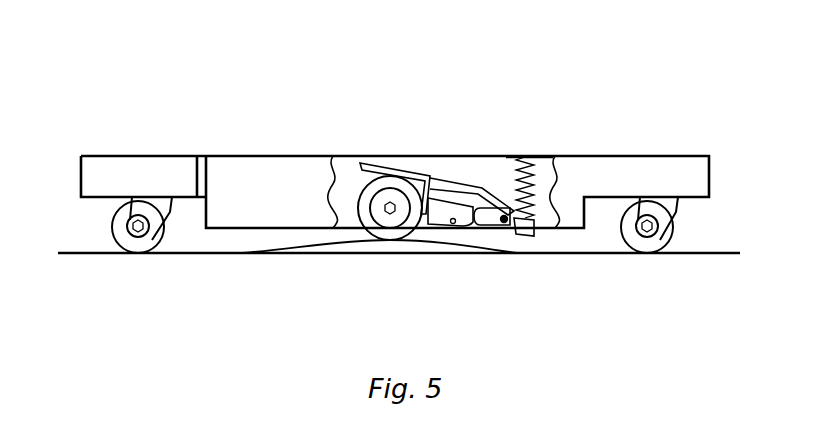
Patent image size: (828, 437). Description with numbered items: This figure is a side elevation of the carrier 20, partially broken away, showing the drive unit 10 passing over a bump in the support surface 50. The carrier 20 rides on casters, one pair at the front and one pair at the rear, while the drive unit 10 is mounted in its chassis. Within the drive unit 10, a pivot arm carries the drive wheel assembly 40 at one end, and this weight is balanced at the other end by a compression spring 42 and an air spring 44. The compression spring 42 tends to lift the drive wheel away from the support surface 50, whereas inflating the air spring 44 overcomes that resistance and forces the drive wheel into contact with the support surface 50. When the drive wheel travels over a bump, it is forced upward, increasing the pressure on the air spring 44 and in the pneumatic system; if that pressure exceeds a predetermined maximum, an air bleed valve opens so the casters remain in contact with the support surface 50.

The drive unit 10 is at (501, 189).
The carrier 20 is at (688, 131).
The drive wheel assembly 40 is at (406, 241).
The compression spring 42 is at (534, 182).
The air spring 44 is at (499, 226).
The support surface 50 is at (203, 255).